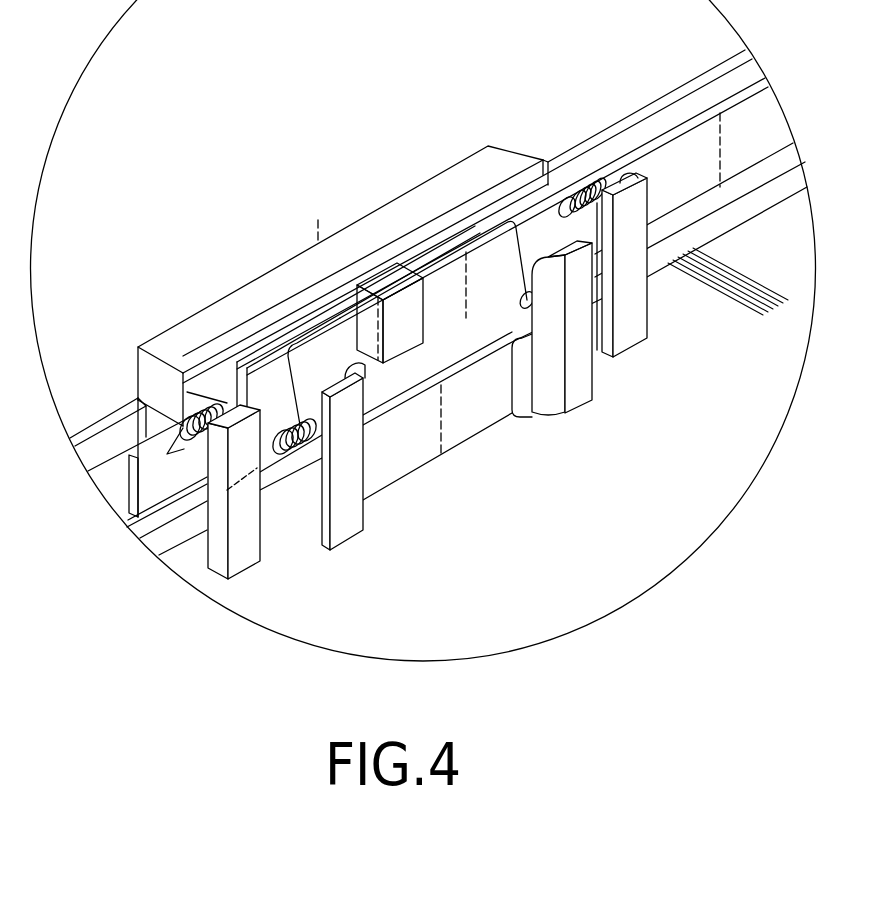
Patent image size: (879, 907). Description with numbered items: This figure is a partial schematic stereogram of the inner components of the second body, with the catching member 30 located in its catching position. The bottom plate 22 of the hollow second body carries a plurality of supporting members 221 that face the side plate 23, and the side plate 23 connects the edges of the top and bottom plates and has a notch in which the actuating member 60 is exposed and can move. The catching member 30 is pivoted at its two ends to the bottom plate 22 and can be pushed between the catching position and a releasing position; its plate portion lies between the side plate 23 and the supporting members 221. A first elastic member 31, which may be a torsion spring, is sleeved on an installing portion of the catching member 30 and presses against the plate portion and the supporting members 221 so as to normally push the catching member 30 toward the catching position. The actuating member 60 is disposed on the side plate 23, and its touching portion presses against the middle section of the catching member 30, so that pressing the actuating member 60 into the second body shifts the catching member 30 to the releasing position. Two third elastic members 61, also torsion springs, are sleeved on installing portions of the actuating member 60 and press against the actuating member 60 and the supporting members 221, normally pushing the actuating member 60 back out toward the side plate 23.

The bottom plate 22 is at (600, 495).
The supporting members 221 is at (342, 518).
The side plate 23 is at (108, 437).
The catching member 30 is at (262, 370).
The first elastic member 31 is at (313, 415).
The actuating member 60 is at (352, 220).
The third elastic members 61 is at (208, 402).